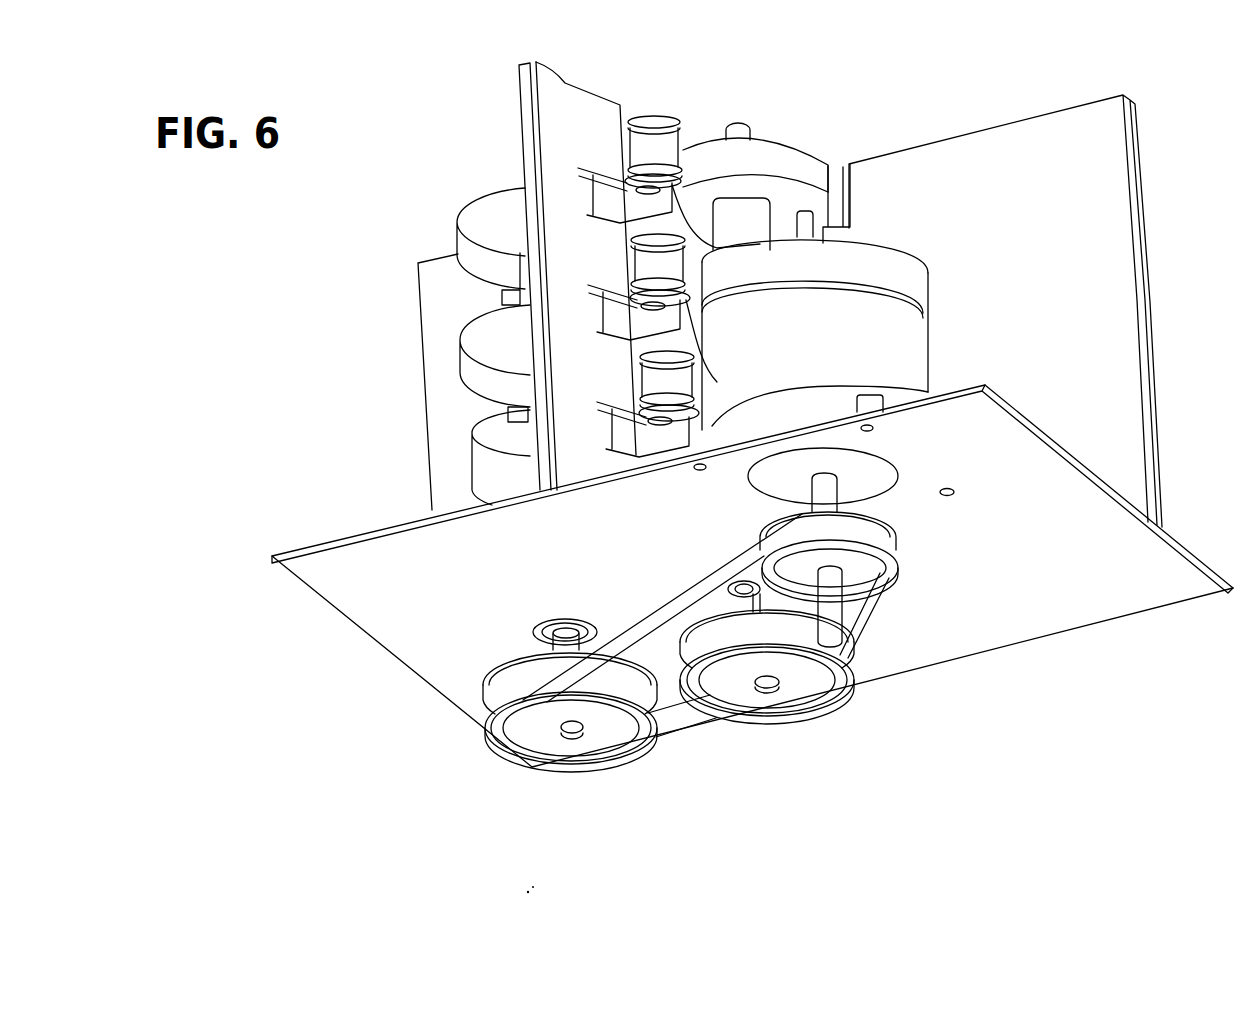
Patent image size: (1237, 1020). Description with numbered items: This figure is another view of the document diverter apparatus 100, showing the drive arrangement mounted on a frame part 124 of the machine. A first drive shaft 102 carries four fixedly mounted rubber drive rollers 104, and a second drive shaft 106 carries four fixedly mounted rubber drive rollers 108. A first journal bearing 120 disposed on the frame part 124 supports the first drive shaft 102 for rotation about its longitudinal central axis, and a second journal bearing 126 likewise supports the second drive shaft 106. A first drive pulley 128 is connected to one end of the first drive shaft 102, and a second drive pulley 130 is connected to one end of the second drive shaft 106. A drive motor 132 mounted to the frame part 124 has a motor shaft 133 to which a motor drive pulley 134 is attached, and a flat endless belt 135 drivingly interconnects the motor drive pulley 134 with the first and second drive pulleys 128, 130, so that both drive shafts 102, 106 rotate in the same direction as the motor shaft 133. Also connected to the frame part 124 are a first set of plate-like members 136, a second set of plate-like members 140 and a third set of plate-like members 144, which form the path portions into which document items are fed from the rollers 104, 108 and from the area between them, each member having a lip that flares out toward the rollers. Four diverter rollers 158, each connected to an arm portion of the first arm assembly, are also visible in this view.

The diverter apparatus 100 is at (246, 738).
The first drive shaft 102 is at (742, 118).
The rubber drive rollers 104 is at (697, 278).
The second drive shaft 106 is at (572, 736).
The rubber drive rollers 108 is at (470, 226).
The first journal bearing 120 is at (722, 598).
The frame part 124 is at (332, 610).
The second journal bearing 126 is at (546, 638).
The first drive pulley 128 is at (806, 707).
The second drive pulley 130 is at (613, 752).
The drive motor 132 is at (890, 341).
The motor shaft 133 is at (845, 650).
The motor drive pulley 134 is at (889, 576).
The flat endless belt 135 is at (640, 616).
The first set of plate-like members 136 is at (996, 126).
The second set of plate-like members 140 is at (420, 383).
The third set of plate-like members 144 is at (519, 84).
The diverter rollers 158 is at (650, 235).